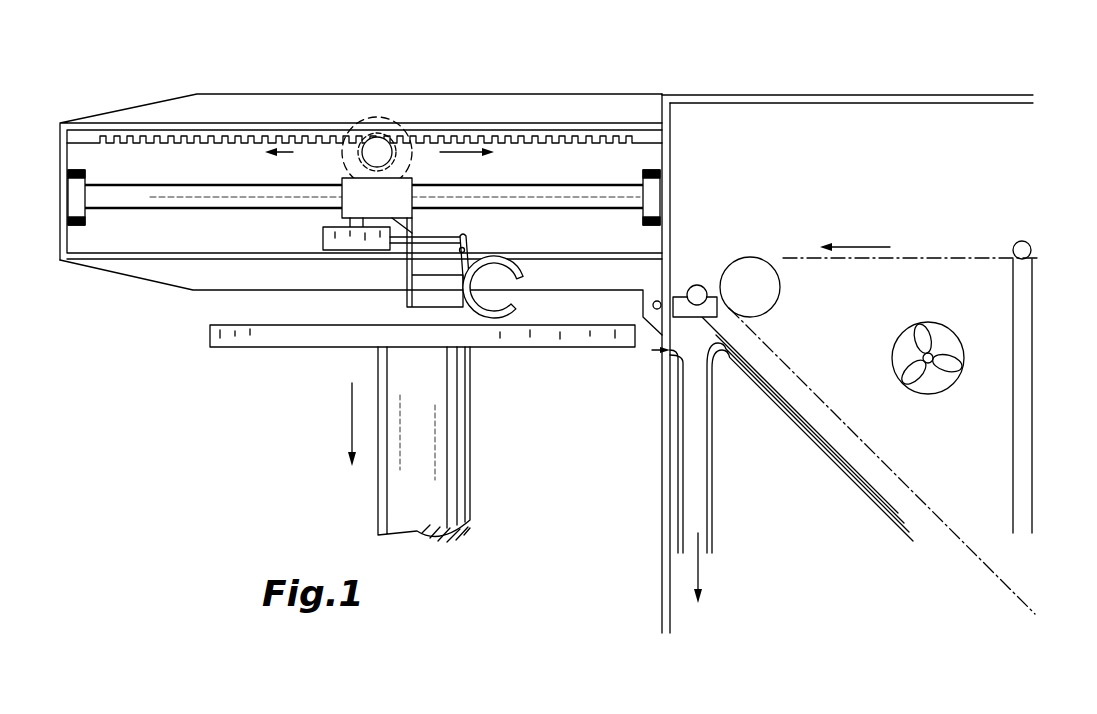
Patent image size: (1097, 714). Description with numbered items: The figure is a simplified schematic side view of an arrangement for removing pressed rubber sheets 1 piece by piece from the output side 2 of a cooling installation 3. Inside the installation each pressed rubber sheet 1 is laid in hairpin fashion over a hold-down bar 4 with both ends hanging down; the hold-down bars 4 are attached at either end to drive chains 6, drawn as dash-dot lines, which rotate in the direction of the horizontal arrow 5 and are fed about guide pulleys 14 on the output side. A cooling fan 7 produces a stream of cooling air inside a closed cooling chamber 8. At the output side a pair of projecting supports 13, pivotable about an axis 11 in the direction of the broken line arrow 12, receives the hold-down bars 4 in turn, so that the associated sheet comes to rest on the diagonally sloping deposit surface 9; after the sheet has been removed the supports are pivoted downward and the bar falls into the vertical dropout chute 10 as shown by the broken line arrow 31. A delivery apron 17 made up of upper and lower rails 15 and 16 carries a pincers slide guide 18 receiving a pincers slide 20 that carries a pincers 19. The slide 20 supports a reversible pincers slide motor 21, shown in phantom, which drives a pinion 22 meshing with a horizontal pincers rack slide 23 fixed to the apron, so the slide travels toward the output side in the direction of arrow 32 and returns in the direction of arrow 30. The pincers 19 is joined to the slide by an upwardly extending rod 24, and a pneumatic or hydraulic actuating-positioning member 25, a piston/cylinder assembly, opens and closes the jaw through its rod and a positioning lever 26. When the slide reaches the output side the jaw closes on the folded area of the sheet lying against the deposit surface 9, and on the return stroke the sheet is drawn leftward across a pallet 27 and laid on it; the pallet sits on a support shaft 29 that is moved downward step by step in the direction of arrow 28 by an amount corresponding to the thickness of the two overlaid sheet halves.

The pressed rubber sheet 1 is at (1015, 342).
The output side 2 is at (637, 362).
The cooling installation 3 is at (877, 85).
The hold-down bar 4 is at (698, 290).
The horizontal arrow 5 is at (863, 243).
The drive chain 6 is at (935, 260).
The cooling fan 7 is at (910, 337).
The closed cooling chamber 8 is at (950, 102).
The deposit surface 9 is at (823, 452).
The dropout chute 10 is at (680, 480).
The axis 11 is at (654, 300).
The broken line arrow 12 is at (717, 360).
The projecting support 13 is at (675, 298).
The guide pulley 14 is at (770, 287).
The upper rail 15 is at (258, 102).
The lower rail 16 is at (188, 275).
The delivery apron 17 is at (394, 80).
The pincers slide guide 18 is at (250, 202).
The pincers 19 is at (506, 246).
The pincers slide 20 is at (342, 188).
The pincers slide motor 21 is at (407, 113).
The pinion 22 is at (375, 143).
The pincers rack slide 23 is at (560, 135).
The upwardly extending rod 24 is at (407, 288).
The actuating-positioning member 25 is at (328, 238).
The positioning lever 26 is at (466, 248).
The pallet 27 is at (297, 337).
The arrow 28 is at (350, 418).
The support shaft 29 is at (455, 397).
The arrow 30 is at (290, 152).
The broken line arrow 31 is at (698, 563).
The arrow 32 is at (450, 152).